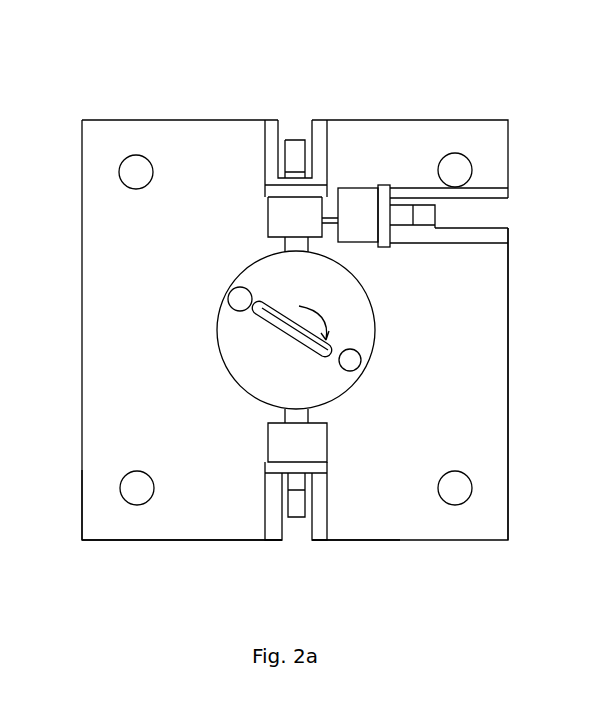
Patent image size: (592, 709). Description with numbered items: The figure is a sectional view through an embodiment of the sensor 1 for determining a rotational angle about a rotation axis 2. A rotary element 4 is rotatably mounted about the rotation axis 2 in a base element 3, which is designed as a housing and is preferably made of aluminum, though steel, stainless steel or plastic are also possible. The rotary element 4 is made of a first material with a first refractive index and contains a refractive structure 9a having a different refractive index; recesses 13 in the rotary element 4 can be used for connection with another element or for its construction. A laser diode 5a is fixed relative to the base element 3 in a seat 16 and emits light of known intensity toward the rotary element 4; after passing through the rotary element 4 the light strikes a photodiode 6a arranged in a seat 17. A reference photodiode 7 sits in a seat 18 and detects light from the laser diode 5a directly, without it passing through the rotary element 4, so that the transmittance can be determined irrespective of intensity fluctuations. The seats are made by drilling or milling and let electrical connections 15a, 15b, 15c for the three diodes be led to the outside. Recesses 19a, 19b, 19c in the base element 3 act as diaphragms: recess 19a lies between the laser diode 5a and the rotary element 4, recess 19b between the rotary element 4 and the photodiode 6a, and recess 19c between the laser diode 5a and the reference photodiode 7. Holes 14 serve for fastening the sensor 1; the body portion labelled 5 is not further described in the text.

The sensor 1 is at (75, 104).
The rotation axis 2 is at (205, 372).
The base element 3 is at (95, 402).
The rotary element 4 is at (262, 320).
The housing block 5 is at (515, 305).
The laser diode 5a is at (262, 165).
The photodiode 6a is at (320, 443).
The reference photodiode 7 is at (358, 207).
The refractive structure 9a is at (362, 358).
The recesses 13 is at (228, 296).
The holes 14 is at (82, 514).
The electrical connection 15a is at (305, 150).
The electrical connection 15b is at (290, 515).
The electrical connection 15c is at (400, 203).
The seat 16 is at (283, 173).
The seat 17 is at (240, 542).
The seat 18 is at (445, 187).
The recess 19a is at (275, 233).
The recess 19b is at (328, 432).
The recess 19c is at (331, 205).